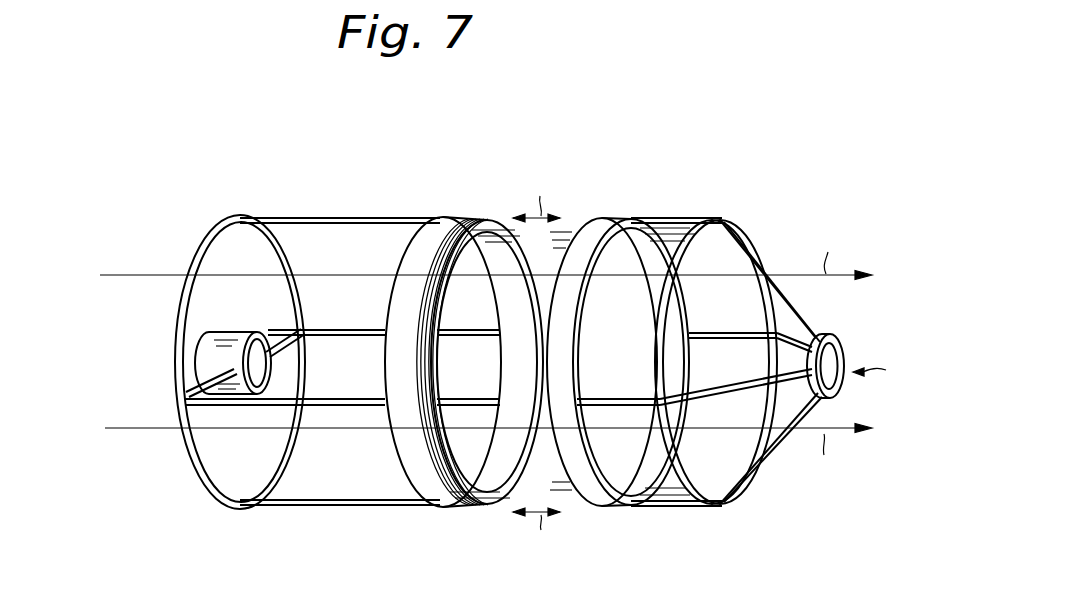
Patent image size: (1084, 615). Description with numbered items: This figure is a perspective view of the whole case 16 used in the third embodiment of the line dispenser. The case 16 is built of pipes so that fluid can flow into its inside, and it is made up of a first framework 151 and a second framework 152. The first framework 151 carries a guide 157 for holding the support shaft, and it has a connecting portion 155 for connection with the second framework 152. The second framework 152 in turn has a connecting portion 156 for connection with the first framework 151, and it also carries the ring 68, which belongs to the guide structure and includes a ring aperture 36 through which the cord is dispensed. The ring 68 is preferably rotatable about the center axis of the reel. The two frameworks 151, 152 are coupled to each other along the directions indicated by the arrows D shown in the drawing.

The case 16 is at (584, 166).
The first framework 151 is at (374, 205).
The guide 157 is at (212, 363).
The connecting portion 155 is at (468, 216).
The connecting portion 156 is at (610, 217).
The second framework 152 is at (692, 210).
The ring 68 is at (842, 346).
The ring aperture 36 is at (891, 375).